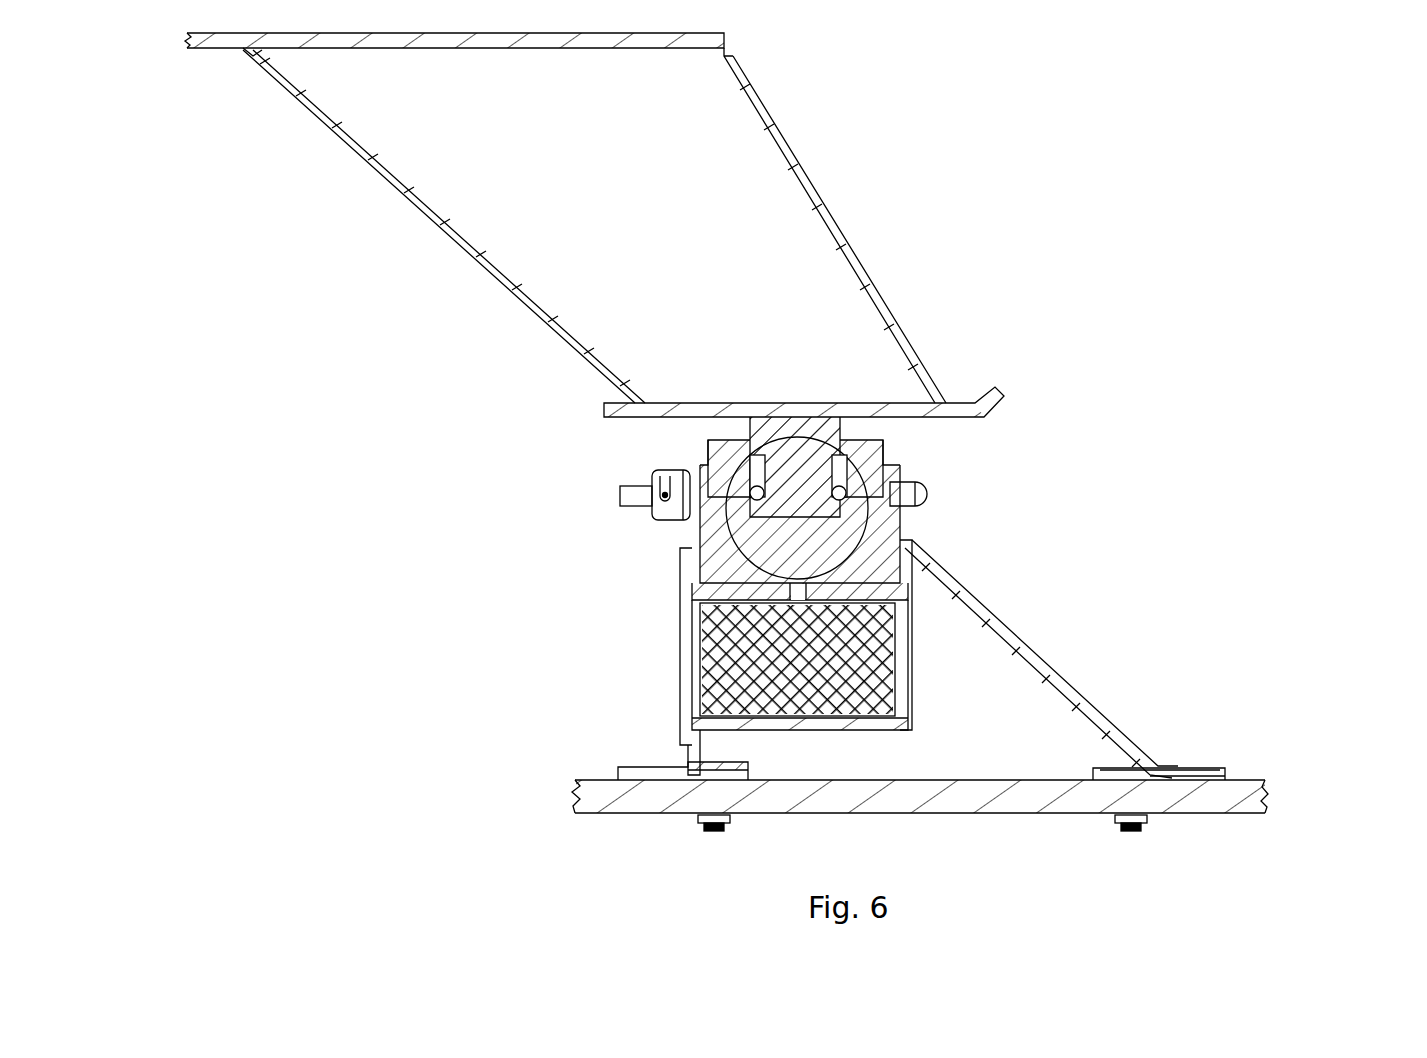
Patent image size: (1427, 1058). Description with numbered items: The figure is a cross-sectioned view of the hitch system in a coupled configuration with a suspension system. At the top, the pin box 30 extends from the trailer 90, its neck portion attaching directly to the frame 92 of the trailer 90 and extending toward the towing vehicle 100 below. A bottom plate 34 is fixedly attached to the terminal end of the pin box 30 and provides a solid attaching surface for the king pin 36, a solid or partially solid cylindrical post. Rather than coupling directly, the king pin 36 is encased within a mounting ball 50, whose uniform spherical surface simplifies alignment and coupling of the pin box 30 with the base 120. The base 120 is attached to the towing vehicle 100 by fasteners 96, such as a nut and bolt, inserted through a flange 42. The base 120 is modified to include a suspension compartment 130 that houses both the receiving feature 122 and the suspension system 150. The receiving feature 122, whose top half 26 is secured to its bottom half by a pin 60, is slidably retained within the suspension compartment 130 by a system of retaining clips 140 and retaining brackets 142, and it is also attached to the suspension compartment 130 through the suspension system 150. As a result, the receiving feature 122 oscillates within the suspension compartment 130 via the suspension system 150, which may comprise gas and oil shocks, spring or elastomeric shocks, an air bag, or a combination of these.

The top half 26 is at (868, 473).
The pin box 30 is at (838, 208).
The bottom plate 34 is at (1010, 388).
The king pin 36 is at (785, 478).
The flange 42 is at (1198, 764).
The mounting ball 50 is at (832, 537).
The pin 60 is at (612, 508).
The trailer 90 is at (198, 52).
The frame 92 is at (234, 54).
The fastener 96 is at (1154, 750).
The towing vehicle 100 is at (1268, 778).
The base 120 is at (1070, 686).
The receiving feature 122 is at (688, 563).
The suspension compartment 130 is at (913, 675).
The retaining clips 140 is at (916, 560).
The retaining brackets 142 is at (908, 546).
The suspension system 150 is at (730, 662).